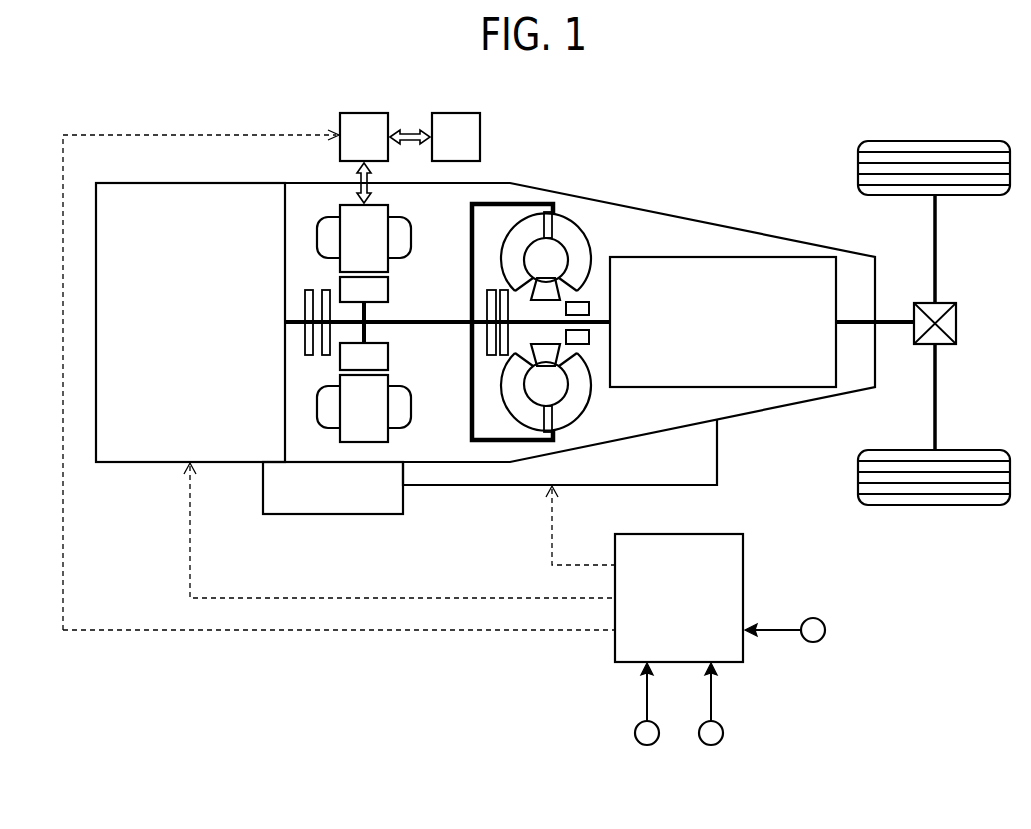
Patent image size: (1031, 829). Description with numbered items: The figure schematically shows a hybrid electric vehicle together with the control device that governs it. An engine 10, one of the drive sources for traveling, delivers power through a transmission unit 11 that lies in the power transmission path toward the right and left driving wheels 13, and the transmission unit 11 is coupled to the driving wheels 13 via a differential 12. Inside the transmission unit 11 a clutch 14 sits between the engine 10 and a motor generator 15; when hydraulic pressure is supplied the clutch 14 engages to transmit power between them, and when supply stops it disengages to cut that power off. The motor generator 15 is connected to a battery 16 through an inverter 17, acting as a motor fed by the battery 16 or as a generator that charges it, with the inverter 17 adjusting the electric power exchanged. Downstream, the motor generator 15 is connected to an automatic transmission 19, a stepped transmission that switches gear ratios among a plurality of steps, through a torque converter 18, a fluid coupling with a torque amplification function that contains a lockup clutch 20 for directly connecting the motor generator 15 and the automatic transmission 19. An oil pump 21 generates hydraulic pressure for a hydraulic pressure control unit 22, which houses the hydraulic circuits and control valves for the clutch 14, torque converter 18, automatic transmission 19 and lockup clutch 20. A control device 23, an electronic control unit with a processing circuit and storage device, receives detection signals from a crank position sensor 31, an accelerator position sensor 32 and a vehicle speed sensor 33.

The engine 10 is at (137, 466).
The transmission unit 11 is at (772, 412).
The differential 12 is at (945, 300).
The driving wheels 13 is at (975, 197).
The clutch 14 is at (300, 338).
The motor generator 15 is at (412, 237).
The battery 16 is at (483, 137).
The inverter 17 is at (338, 145).
The torque converter 18 is at (588, 226).
The automatic transmission 19 is at (648, 388).
The lockup clutch 20 is at (483, 308).
The oil pump 21 is at (333, 516).
The hydraulic pressure control unit 22 is at (468, 488).
The control device 23 is at (745, 555).
The crank position sensor 31 is at (826, 630).
The accelerator position sensor 32 is at (712, 745).
The vehicle speed sensor 33 is at (648, 745).